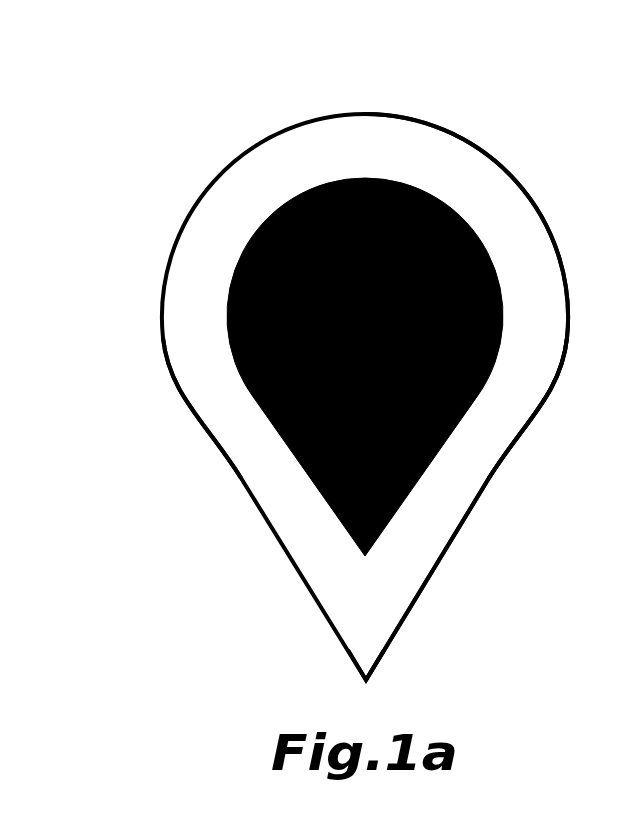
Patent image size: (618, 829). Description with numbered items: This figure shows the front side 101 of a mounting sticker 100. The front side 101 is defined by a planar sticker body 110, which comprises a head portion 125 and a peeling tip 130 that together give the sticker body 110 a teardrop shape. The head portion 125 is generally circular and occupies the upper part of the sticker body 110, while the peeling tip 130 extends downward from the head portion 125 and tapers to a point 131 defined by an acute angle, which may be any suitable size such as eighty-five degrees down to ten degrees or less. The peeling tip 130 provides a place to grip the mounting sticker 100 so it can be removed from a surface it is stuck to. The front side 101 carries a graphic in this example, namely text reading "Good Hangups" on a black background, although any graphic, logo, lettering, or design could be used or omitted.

The mounting sticker 100 is at (490, 114).
The front side 101 is at (207, 131).
The head portion 125 is at (527, 183).
The sticker body 110 is at (197, 432).
The peeling tip 130 is at (430, 588).
The point 131 is at (357, 671).